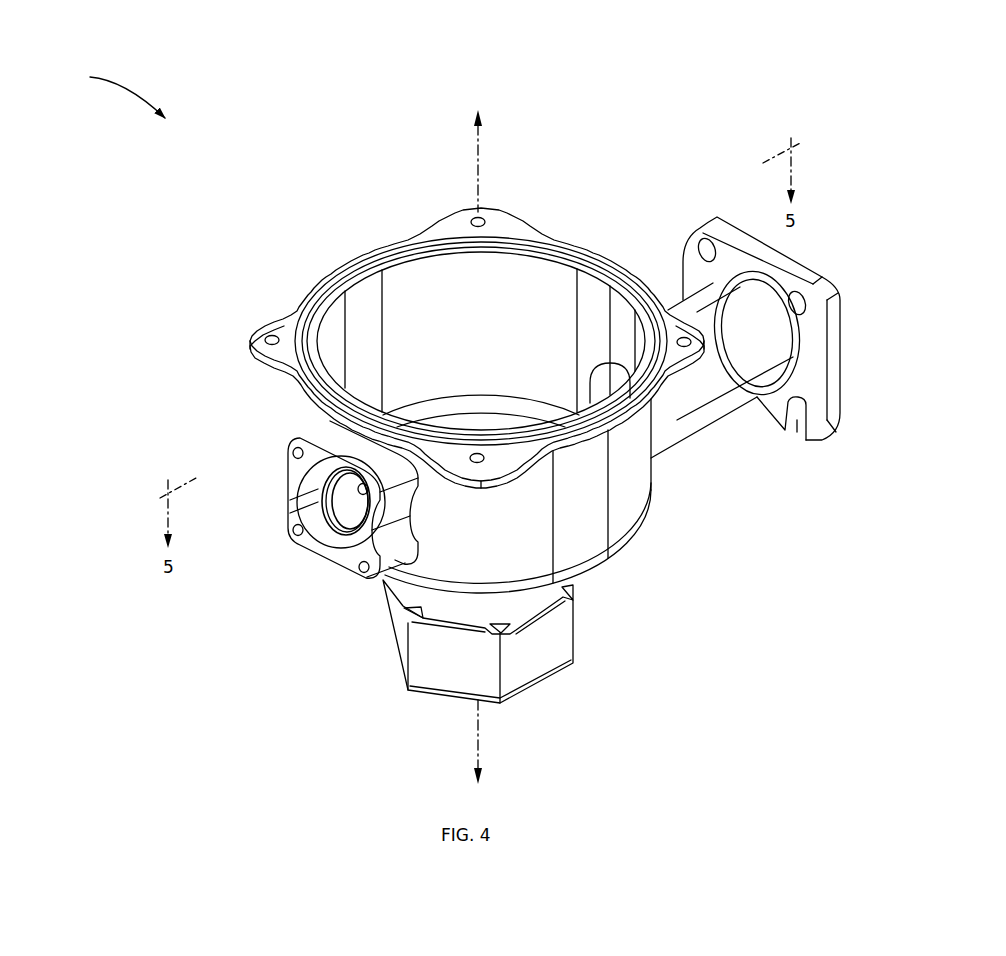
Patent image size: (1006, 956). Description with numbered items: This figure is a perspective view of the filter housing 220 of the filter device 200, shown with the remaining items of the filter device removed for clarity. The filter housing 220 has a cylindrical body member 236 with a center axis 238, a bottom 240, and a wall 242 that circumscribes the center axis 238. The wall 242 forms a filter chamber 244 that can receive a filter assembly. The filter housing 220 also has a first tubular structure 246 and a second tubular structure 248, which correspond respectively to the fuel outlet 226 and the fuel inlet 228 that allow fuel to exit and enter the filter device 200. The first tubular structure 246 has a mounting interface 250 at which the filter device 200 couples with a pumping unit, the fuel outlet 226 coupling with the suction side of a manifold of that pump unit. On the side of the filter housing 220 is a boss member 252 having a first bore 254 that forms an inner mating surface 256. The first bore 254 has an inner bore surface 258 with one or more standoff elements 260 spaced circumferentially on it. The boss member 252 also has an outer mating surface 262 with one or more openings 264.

The filter device 200 is at (110, 93).
The filter housing 220 is at (620, 527).
The fuel outlet 226 is at (826, 319).
The fuel inlet 228 is at (432, 716).
The cylindrical body member 236 is at (448, 325).
The center axis 238 is at (481, 143).
The bottom 240 is at (513, 423).
The wall 242 is at (364, 296).
The filter chamber 244 is at (520, 264).
The first tubular structure 246 is at (740, 428).
The second tubular structure 248 is at (296, 700).
The mounting interface 250 is at (856, 394).
The boss member 252 is at (282, 523).
The first bore 254 is at (302, 495).
The inner mating surface 256 is at (358, 536).
The inner bore surface 258 is at (335, 542).
The standoff elements 260 is at (294, 520).
The outer mating surface 262 is at (305, 430).
The openings 264 is at (290, 457).